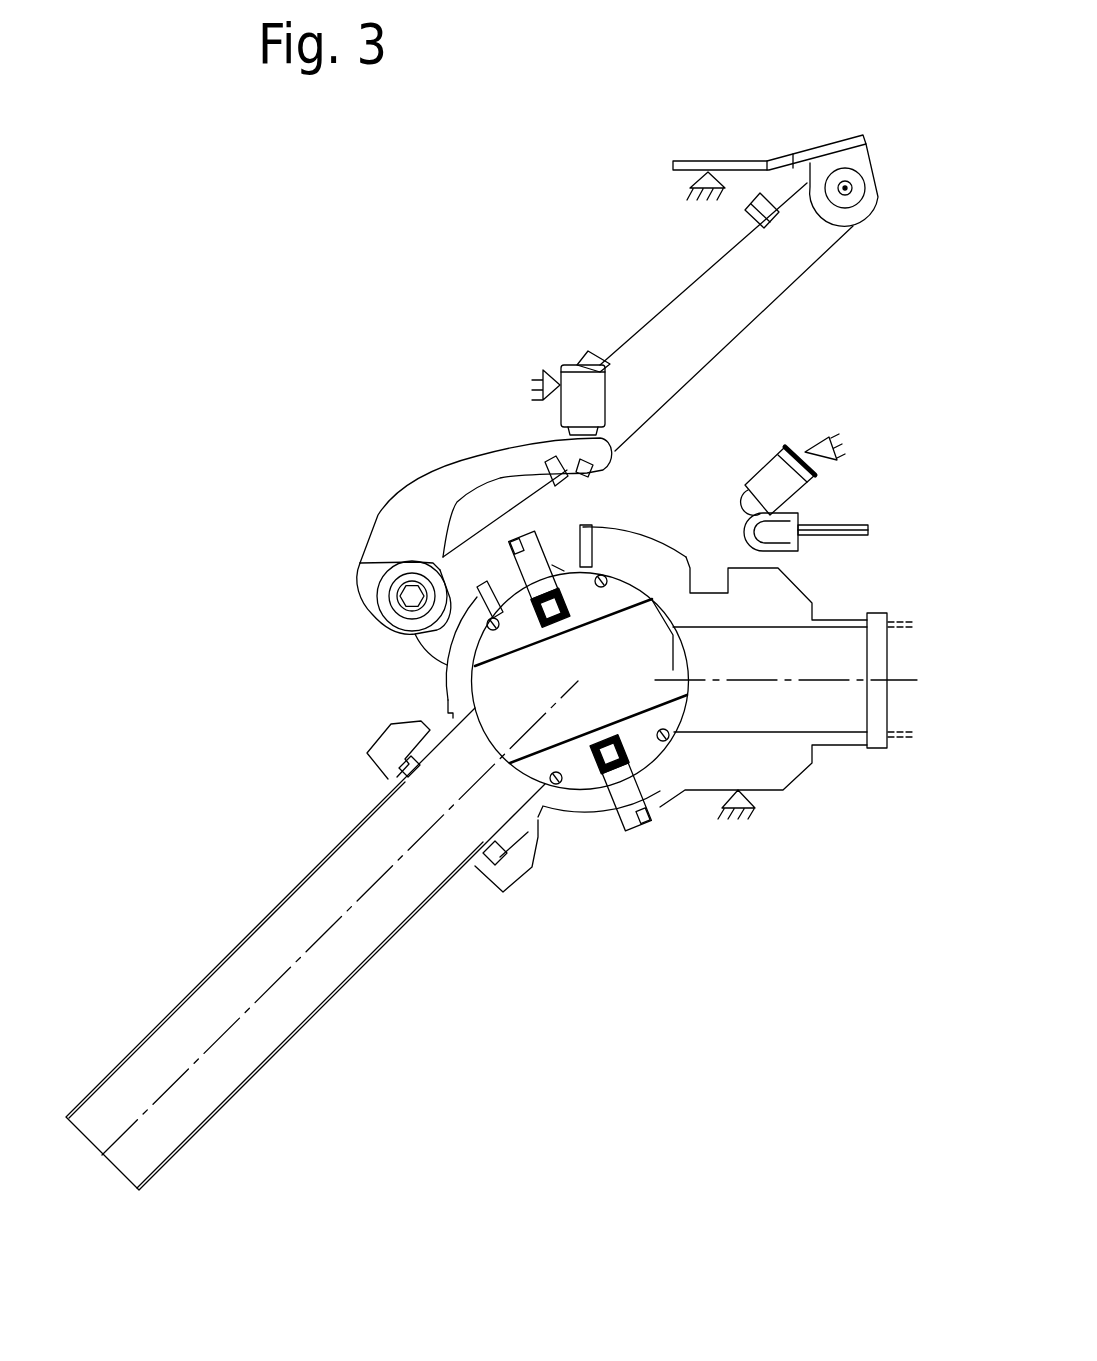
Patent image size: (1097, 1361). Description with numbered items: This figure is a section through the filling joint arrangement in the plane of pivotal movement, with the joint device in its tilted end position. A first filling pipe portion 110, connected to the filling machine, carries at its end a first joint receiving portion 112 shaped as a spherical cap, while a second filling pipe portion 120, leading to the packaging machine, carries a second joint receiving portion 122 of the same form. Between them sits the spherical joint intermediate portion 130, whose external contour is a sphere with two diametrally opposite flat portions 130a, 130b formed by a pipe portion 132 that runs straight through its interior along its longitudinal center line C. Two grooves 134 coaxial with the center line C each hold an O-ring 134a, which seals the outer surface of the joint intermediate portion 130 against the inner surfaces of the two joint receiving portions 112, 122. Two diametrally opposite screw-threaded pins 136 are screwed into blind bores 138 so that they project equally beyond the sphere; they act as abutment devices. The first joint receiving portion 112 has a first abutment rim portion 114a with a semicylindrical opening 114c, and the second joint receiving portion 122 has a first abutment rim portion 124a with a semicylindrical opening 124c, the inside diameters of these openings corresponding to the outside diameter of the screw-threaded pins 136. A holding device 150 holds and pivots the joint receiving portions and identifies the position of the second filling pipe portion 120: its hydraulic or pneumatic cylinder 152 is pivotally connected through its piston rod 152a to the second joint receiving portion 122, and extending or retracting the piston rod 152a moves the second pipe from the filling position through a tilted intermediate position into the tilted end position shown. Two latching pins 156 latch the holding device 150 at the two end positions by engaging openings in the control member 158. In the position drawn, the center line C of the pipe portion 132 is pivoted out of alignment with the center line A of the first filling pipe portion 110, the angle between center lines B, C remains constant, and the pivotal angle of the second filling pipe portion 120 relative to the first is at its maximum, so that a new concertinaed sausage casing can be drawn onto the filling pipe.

The first filling pipe portion 110 is at (903, 740).
The first joint receiving portion 112 is at (778, 770).
The first abutment rim portion 114a is at (579, 542).
The semicylindrical opening 114c is at (588, 565).
The second filling pipe portion 120 is at (286, 1008).
The second joint receiving portion 122 is at (523, 818).
The first abutment rim portion 124a is at (484, 592).
The semicylindrical opening 124c is at (482, 593).
The joint intermediate portion 130 is at (587, 765).
The flat portion 130a is at (667, 628).
The flat portion 130b is at (448, 707).
The pipe portion 132 is at (568, 740).
The groove 134 is at (606, 584).
The O-ring 134a is at (604, 580).
The screw-threaded pin 136 is at (512, 537).
The blind bore 138 is at (558, 568).
The holding device 150 is at (664, 248).
The cylinder 152 is at (752, 291).
The piston rod 152a is at (523, 490).
The latching pin 156 is at (572, 380).
The control member 158 is at (472, 470).
The longitudinal center line A is at (917, 680).
The longitudinal center line B is at (157, 1097).
The longitudinal center line C is at (647, 657).